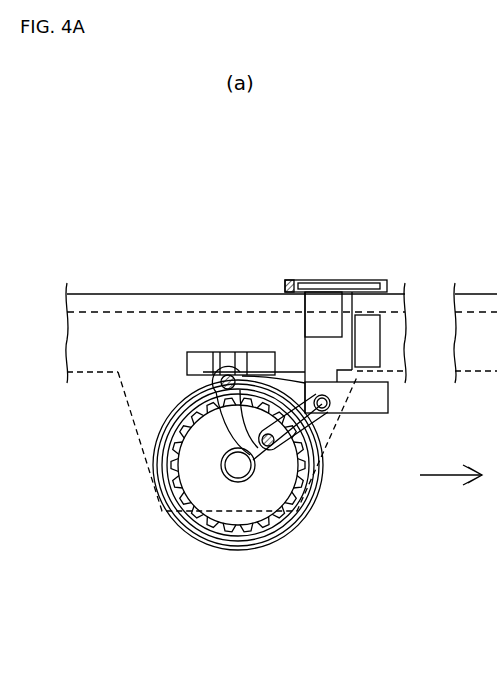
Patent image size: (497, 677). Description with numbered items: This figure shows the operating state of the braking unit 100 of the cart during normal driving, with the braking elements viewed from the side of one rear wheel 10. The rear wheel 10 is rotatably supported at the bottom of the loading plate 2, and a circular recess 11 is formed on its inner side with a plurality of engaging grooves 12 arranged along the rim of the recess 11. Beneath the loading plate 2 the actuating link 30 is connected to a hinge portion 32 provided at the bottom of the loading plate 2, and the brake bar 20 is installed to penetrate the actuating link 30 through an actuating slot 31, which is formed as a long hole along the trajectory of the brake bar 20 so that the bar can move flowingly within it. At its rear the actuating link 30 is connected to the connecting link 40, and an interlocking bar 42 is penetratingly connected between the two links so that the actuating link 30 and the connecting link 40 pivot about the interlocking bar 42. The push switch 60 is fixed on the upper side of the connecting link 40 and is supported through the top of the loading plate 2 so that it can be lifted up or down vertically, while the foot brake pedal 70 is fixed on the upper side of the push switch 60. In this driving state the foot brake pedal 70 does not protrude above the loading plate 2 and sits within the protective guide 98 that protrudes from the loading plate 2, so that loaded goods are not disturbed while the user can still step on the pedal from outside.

The loading plate 2 is at (131, 293).
The braking unit 100 is at (310, 241).
The foot brake pedal 70 is at (362, 282).
The protective guide 98 is at (286, 284).
The push switch 60 is at (315, 350).
The connecting link 40 is at (388, 401).
The interlocking bar 42 is at (330, 404).
The actuating link 30 is at (305, 383).
The actuating slot 31 is at (273, 446).
The hinge portion 32 is at (216, 375).
The rear wheel 10 is at (203, 537).
The circular recess 11 is at (205, 478).
The engaging groove 12 is at (269, 523).
The brake bar 20 is at (292, 512).